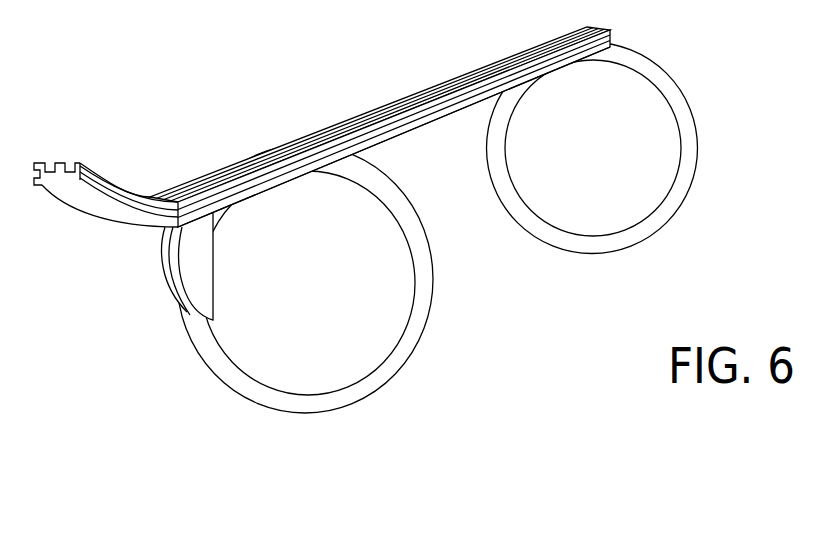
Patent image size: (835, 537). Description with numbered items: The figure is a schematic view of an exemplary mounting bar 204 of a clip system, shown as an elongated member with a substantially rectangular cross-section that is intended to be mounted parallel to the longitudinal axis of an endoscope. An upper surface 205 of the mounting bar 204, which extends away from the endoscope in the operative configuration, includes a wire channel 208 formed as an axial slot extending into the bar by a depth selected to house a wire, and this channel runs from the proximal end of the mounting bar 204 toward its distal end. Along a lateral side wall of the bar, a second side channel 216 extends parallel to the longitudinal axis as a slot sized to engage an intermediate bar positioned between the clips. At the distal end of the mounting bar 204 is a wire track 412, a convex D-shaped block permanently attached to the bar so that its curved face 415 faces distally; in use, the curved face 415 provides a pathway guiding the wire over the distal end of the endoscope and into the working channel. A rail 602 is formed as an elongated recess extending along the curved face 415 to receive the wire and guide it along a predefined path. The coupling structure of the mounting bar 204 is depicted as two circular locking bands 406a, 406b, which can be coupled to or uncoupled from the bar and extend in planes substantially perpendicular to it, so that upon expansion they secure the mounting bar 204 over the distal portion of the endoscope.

The mounting bar 204 is at (347, 120).
The upper surface 205 is at (248, 159).
The second side channel 216 is at (302, 138).
The wire channel 208 is at (192, 181).
The rail 602 is at (172, 257).
The curved face 415 is at (175, 286).
The wire track 412 is at (193, 283).
The locking band 406a is at (280, 413).
The locking band 406b is at (563, 237).